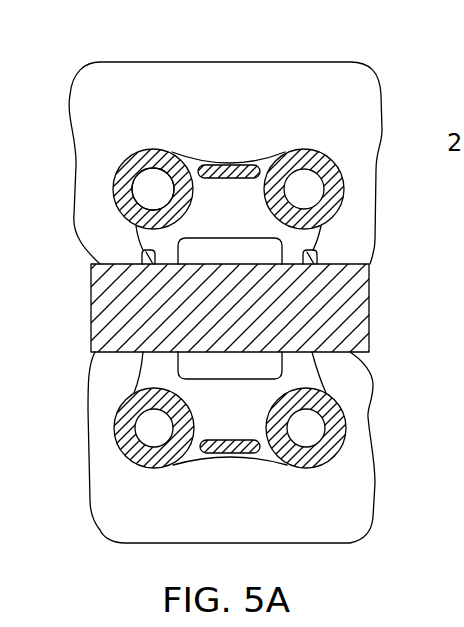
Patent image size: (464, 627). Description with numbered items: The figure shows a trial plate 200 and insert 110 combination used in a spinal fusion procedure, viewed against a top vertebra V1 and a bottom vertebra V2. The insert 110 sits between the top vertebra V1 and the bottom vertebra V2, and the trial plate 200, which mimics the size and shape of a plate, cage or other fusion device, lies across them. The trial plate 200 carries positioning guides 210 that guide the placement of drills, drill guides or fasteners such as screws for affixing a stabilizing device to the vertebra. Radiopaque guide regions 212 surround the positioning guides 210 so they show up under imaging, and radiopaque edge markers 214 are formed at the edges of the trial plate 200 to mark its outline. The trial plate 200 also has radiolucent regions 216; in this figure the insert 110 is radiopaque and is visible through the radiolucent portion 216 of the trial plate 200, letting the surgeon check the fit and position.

The insert 110 is at (380, 308).
The trial plate 200 is at (220, 153).
The positioning guides 210 is at (147, 189).
The radiopaque guide regions 212 is at (132, 155).
The radiopaque edge markers 214 is at (232, 165).
The radiolucent regions 216 is at (322, 262).
The top vertebra V1 is at (323, 75).
The bottom vertebra V2 is at (132, 536).